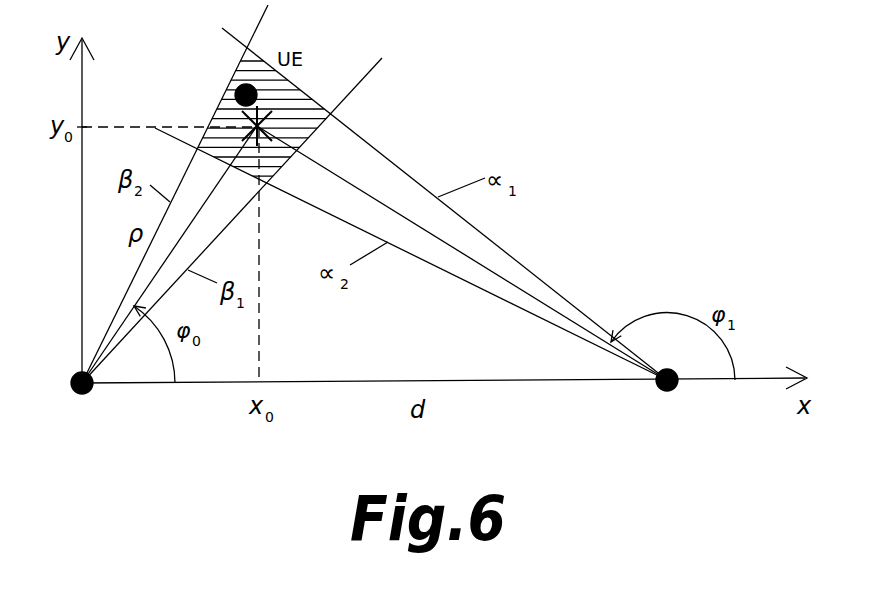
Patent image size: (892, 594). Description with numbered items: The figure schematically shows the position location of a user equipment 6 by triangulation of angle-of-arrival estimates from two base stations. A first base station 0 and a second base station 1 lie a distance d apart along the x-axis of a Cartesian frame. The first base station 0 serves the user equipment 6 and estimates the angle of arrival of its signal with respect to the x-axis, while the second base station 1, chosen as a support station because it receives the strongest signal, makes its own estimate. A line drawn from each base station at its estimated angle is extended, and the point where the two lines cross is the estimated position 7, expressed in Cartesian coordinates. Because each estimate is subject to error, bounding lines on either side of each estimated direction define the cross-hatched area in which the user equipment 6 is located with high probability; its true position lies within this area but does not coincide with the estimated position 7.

The first base station BS0 0 is at (82, 400).
The second base station BS1 1 is at (666, 399).
The user equipment 6 is at (237, 88).
The estimated position 7 is at (257, 126).